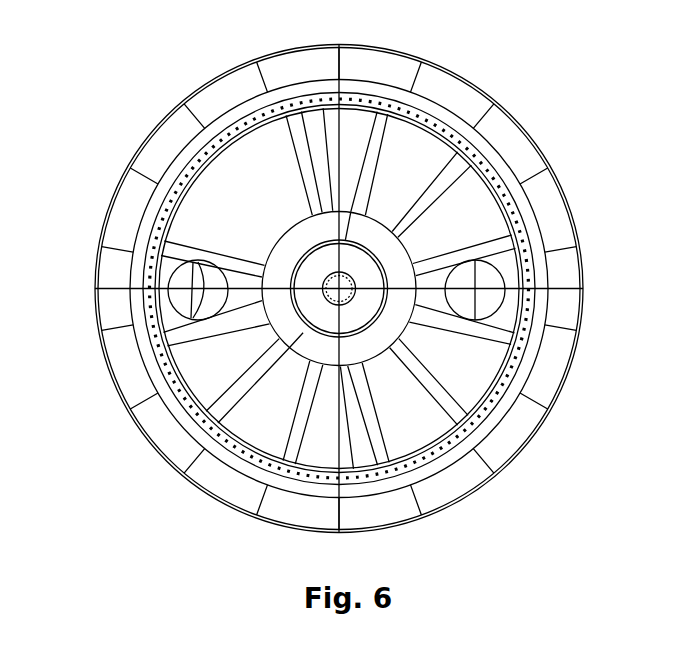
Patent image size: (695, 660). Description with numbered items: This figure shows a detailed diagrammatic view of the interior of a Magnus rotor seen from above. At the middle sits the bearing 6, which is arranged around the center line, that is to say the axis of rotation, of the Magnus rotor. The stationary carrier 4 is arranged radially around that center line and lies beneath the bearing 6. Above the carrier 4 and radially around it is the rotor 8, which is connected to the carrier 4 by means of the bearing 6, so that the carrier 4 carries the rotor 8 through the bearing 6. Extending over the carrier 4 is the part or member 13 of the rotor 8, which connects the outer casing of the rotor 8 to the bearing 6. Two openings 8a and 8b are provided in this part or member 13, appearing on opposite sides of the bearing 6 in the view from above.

The stationary carrier 4 is at (430, 100).
The part or member 13 is at (462, 212).
The opening 8a is at (183, 273).
The opening 8b is at (486, 282).
The rotor 8 is at (556, 399).
The bearing 6 is at (318, 312).